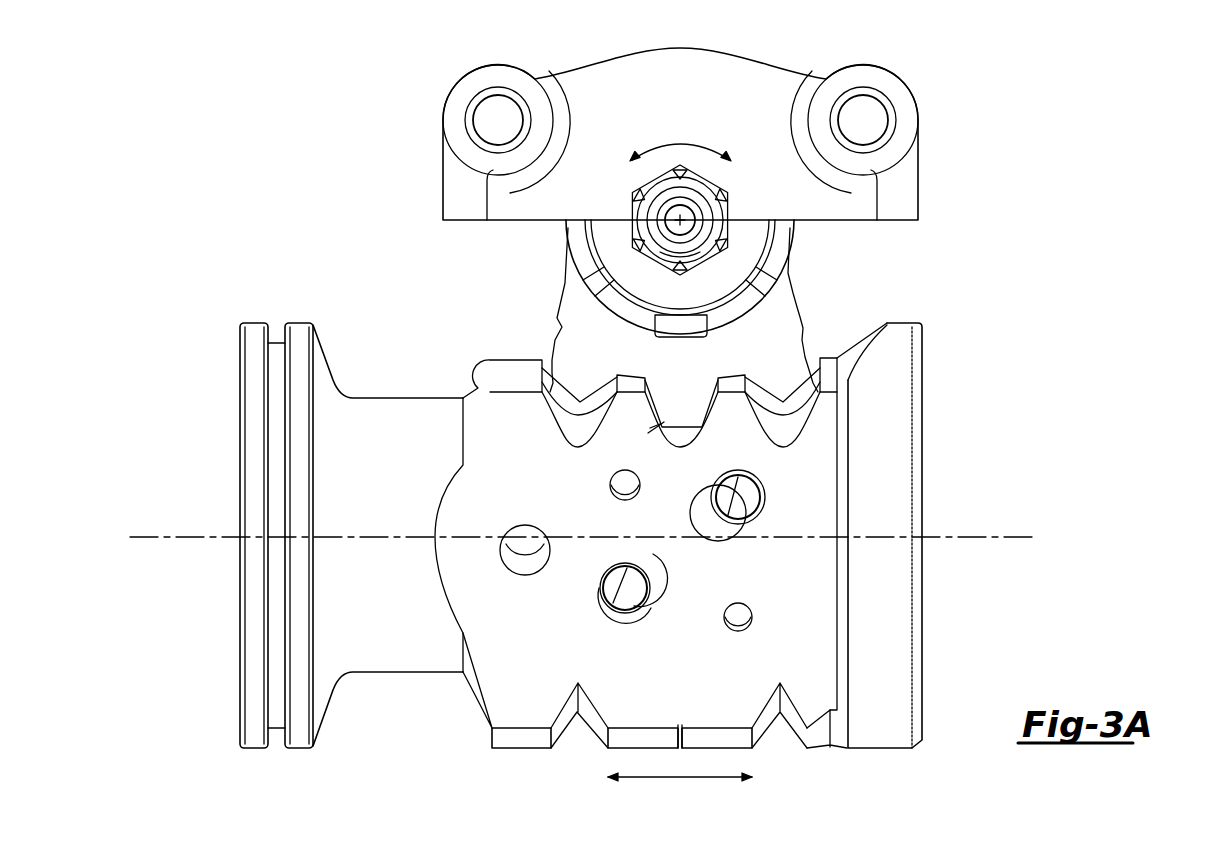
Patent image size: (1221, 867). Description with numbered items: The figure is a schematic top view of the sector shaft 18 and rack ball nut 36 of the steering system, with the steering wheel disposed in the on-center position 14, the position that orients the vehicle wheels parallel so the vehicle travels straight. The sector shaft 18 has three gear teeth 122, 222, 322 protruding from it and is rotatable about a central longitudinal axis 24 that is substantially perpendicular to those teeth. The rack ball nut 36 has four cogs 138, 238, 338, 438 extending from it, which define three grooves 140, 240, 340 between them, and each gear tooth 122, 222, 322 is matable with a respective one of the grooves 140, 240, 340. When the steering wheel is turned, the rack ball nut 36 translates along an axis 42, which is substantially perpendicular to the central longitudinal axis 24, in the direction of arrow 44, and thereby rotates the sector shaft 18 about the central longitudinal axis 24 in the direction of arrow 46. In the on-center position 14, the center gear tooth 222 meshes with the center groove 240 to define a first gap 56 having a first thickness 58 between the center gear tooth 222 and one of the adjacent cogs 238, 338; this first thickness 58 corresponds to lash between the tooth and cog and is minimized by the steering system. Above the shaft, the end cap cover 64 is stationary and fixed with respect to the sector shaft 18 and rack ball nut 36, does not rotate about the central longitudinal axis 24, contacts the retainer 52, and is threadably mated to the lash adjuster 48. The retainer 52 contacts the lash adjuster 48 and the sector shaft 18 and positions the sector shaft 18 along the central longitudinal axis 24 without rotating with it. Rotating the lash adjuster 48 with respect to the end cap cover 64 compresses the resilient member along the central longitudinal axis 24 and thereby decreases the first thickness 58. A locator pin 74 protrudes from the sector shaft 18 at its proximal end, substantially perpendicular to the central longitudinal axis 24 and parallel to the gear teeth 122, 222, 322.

The on-center position 14 is at (300, 132).
The sector shaft 18 is at (536, 299).
The central longitudinal axis 24 is at (697, 224).
The rack ball nut 36 is at (922, 650).
The axis 42 is at (987, 530).
The arrow 44 is at (678, 782).
The arrow 46 is at (680, 140).
The lash adjuster 48 is at (701, 260).
The retainer 52 is at (775, 303).
The first gap 56 is at (660, 440).
The first thickness 58 is at (663, 423).
The end cap cover 64 is at (735, 52).
The locator pin 74 is at (683, 327).
The gear tooth 122 is at (563, 385).
The cog 138 is at (496, 428).
The groove 140 is at (573, 452).
The center gear tooth 222 is at (666, 400).
The cog 238 is at (616, 423).
The center groove 240 is at (680, 452).
The gear tooth 322 is at (773, 385).
The cog 338 is at (721, 423).
The groove 340 is at (782, 452).
The cog 438 is at (808, 437).